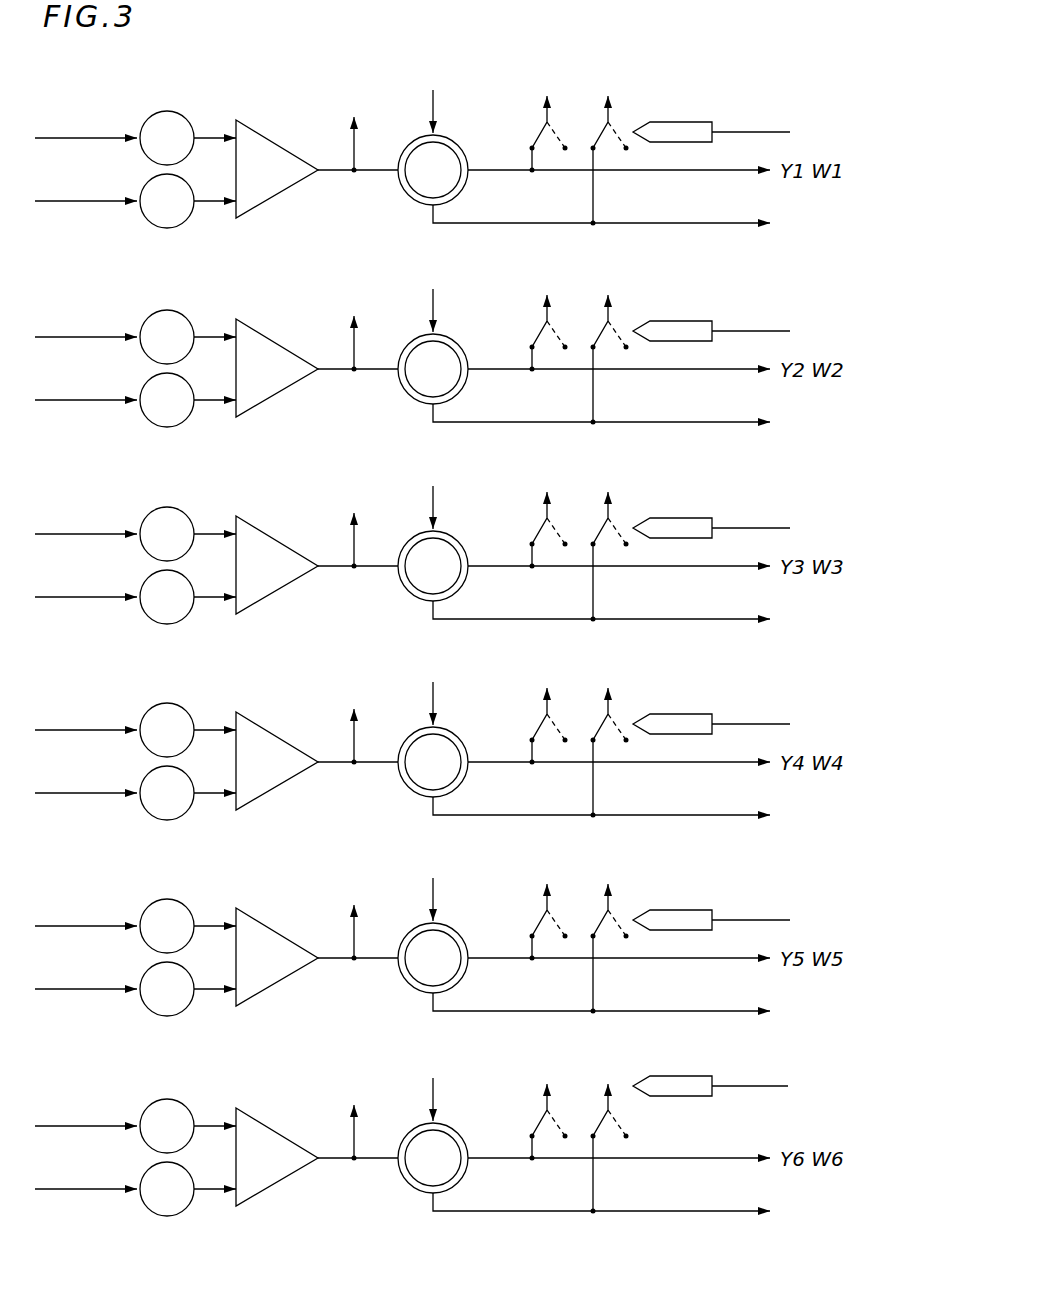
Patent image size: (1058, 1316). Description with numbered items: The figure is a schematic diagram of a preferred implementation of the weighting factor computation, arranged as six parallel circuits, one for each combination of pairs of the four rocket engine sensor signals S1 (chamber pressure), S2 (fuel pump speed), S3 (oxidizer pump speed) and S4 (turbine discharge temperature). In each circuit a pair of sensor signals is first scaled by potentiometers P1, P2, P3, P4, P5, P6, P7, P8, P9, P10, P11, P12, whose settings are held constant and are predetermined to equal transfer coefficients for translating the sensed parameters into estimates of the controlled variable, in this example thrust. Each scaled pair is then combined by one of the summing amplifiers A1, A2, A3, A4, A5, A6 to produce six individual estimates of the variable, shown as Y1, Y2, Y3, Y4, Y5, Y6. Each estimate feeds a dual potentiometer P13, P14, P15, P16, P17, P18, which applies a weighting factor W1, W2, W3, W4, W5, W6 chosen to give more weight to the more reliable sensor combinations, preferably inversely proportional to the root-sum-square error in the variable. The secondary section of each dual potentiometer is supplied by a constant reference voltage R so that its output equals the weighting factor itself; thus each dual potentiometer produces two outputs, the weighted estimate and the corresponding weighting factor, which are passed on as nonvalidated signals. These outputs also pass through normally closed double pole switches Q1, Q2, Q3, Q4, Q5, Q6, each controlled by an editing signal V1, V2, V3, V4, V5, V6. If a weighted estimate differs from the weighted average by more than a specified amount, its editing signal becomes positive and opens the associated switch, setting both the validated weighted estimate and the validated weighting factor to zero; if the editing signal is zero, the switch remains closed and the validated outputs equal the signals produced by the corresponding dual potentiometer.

The potentiometer P1 is at (188, 138).
The potentiometer P2 is at (188, 201).
The potentiometer P3 is at (188, 337).
The potentiometer P4 is at (188, 400).
The potentiometer P5 is at (188, 534).
The potentiometer P6 is at (188, 597).
The potentiometer P7 is at (188, 730).
The potentiometer P8 is at (188, 793).
The potentiometer P9 is at (188, 926).
The potentiometer P10 is at (188, 989).
The potentiometer P11 is at (188, 1126).
The potentiometer P12 is at (188, 1189).
The dual potentiometer P13 is at (433, 170).
The dual potentiometer P14 is at (433, 369).
The dual potentiometer P15 is at (433, 566).
The dual potentiometer P16 is at (433, 762).
The dual potentiometer P17 is at (433, 958).
The dual potentiometer P18 is at (433, 1158).
The summing amplifier A1 is at (277, 169).
The summing amplifier A2 is at (277, 368).
The summing amplifier A3 is at (277, 565).
The summing amplifier A4 is at (277, 761).
The summing amplifier A5 is at (277, 957).
The summing amplifier A6 is at (277, 1157).
The double pole switch Q1 is at (512, 121).
The double pole switch Q2 is at (512, 320).
The double pole switch Q3 is at (512, 517).
The double pole switch Q4 is at (512, 713).
The double pole switch Q5 is at (512, 909).
The double pole switch Q6 is at (512, 1109).
The editing signal V1 is at (711, 123).
The editing signal V2 is at (711, 322).
The editing signal V3 is at (711, 519).
The editing signal V4 is at (711, 715).
The editing signal V5 is at (711, 911).
The editing signal V6 is at (710, 1077).
The estimate of the controlled variable Y1 is at (355, 132).
The estimate of the controlled variable Y2 is at (355, 331).
The estimate of the controlled variable Y3 is at (355, 528).
The estimate of the controlled variable Y4 is at (355, 724).
The estimate of the controlled variable Y5 is at (355, 920).
The estimate of the controlled variable Y6 is at (355, 1120).
The weighting factor W1 is at (624, 152).
The weighting factor W2 is at (624, 351).
The weighting factor W3 is at (624, 548).
The weighting factor W4 is at (624, 744).
The weighting factor W5 is at (624, 940).
The weighting factor W6 is at (624, 1140).
The sensor signal S1 is at (86, 322).
The sensor signal S2 is at (86, 550).
The sensor signal S3 is at (86, 749).
The sensor signal S4 is at (86, 879).
The constant reference voltage R is at (420, 601).